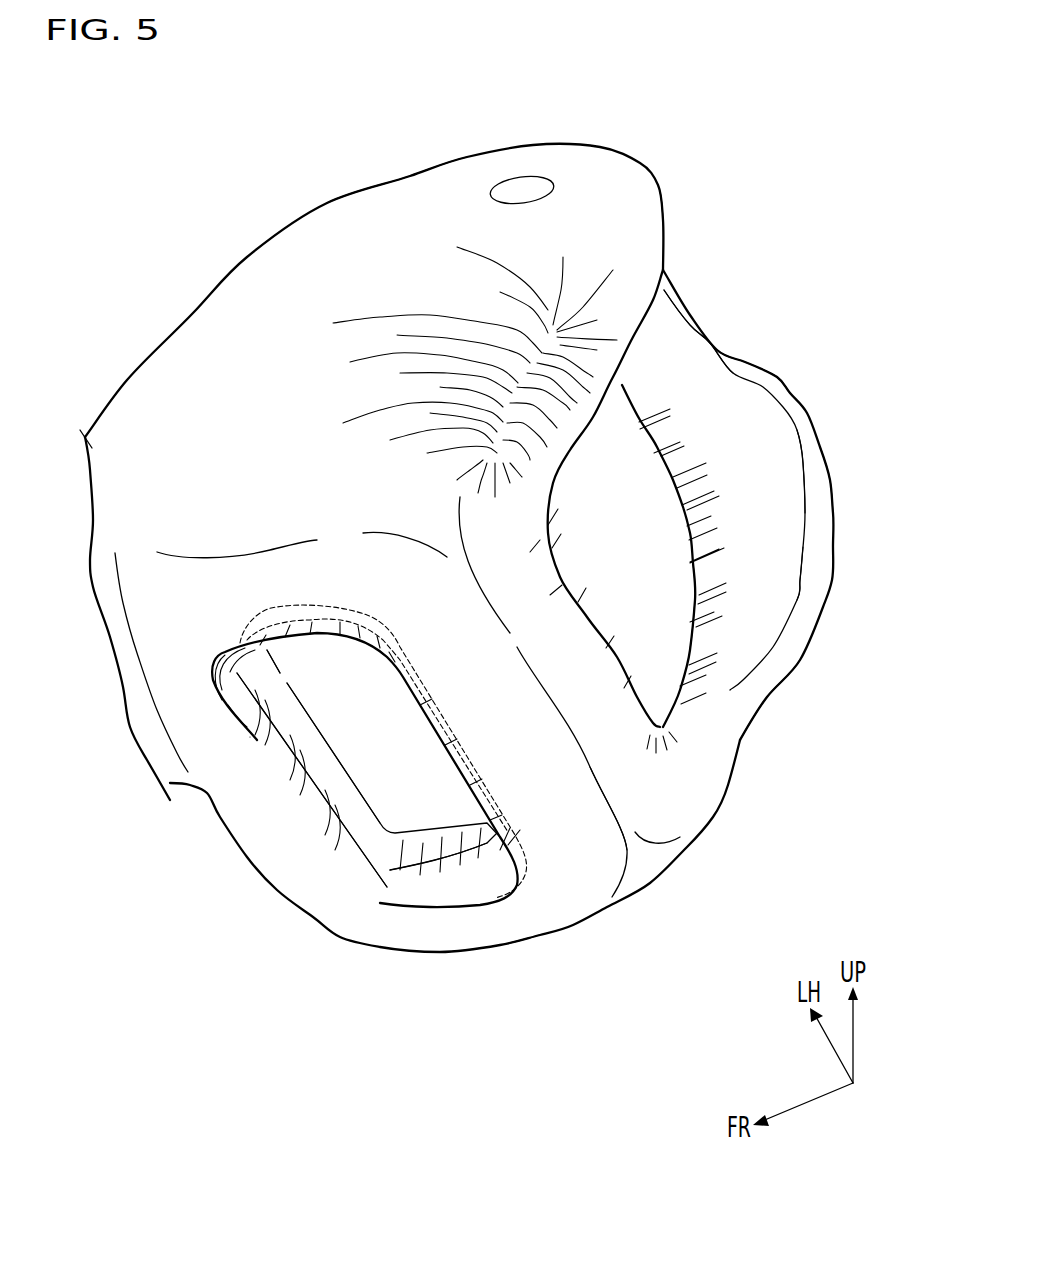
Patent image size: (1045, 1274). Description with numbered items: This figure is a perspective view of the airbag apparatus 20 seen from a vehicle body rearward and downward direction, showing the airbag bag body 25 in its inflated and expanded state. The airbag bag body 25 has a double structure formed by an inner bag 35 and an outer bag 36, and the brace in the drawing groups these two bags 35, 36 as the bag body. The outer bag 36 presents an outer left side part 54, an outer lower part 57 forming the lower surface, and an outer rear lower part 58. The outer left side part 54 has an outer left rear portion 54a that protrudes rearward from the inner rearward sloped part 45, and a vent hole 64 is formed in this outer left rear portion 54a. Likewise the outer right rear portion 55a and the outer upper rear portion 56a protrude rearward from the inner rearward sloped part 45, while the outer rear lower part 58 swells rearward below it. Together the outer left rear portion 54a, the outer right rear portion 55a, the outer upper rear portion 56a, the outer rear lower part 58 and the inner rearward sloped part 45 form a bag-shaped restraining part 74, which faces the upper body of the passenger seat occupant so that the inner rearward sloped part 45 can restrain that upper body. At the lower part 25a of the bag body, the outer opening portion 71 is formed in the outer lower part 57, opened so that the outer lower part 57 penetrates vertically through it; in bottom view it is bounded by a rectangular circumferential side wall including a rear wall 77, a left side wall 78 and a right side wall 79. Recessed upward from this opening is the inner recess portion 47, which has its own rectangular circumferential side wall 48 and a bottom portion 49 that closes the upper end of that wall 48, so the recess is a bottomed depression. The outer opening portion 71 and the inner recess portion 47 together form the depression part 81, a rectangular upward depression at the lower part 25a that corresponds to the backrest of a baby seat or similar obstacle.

The vehicle body structure 20 is at (353, 163).
The airbag bag body 25 is at (880, 312).
The lower part of the airbag bag body 25a is at (563, 827).
The inner bag 35 is at (683, 483).
The outer bag 36 is at (780, 375).
The inner rearward sloped part 45 is at (657, 567).
The inner recess portion 47 is at (292, 712).
The circumferential side wall 48 is at (317, 772).
The bottom portion 49 is at (350, 668).
The outer left side part 54 is at (267, 290).
The outer left rear portion 54a is at (633, 268).
The outer right rear portion 55a is at (773, 575).
The outer upper rear portion 56a is at (673, 345).
The outer lower part 57 is at (497, 912).
The outer rear lower part 58 is at (593, 705).
The vent hole 64 is at (508, 195).
The outer opening portion 71 is at (318, 830).
The restraining part 74 is at (682, 500).
The rear wall 77 is at (318, 737).
The left side wall 78 is at (257, 708).
The right side wall 79 is at (428, 888).
The depression part 81 is at (305, 1003).